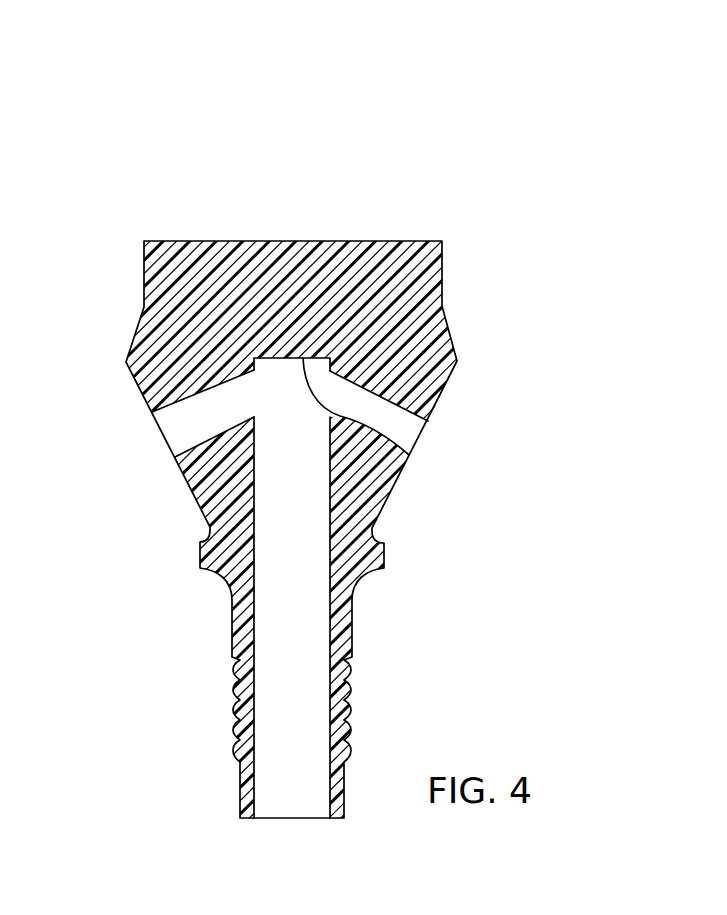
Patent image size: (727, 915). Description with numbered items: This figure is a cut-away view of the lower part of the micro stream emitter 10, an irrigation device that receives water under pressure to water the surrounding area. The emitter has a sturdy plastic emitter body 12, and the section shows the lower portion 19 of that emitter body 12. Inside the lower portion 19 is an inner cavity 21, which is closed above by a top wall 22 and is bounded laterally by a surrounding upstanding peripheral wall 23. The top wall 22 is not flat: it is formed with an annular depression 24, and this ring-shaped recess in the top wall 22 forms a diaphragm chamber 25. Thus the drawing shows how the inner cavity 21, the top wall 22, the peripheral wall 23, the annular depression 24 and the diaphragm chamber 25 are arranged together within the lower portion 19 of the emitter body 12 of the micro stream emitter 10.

The micro stream emitter 10 is at (326, 425).
The emitter body 12 is at (366, 499).
The lower portion 19 is at (388, 497).
The inner cavity 21 is at (293, 386).
The top wall 22 is at (268, 358).
The surrounding upstanding peripheral wall 23 is at (254, 367).
The annular depression 24 is at (312, 394).
The diaphragm chamber 25 is at (285, 367).